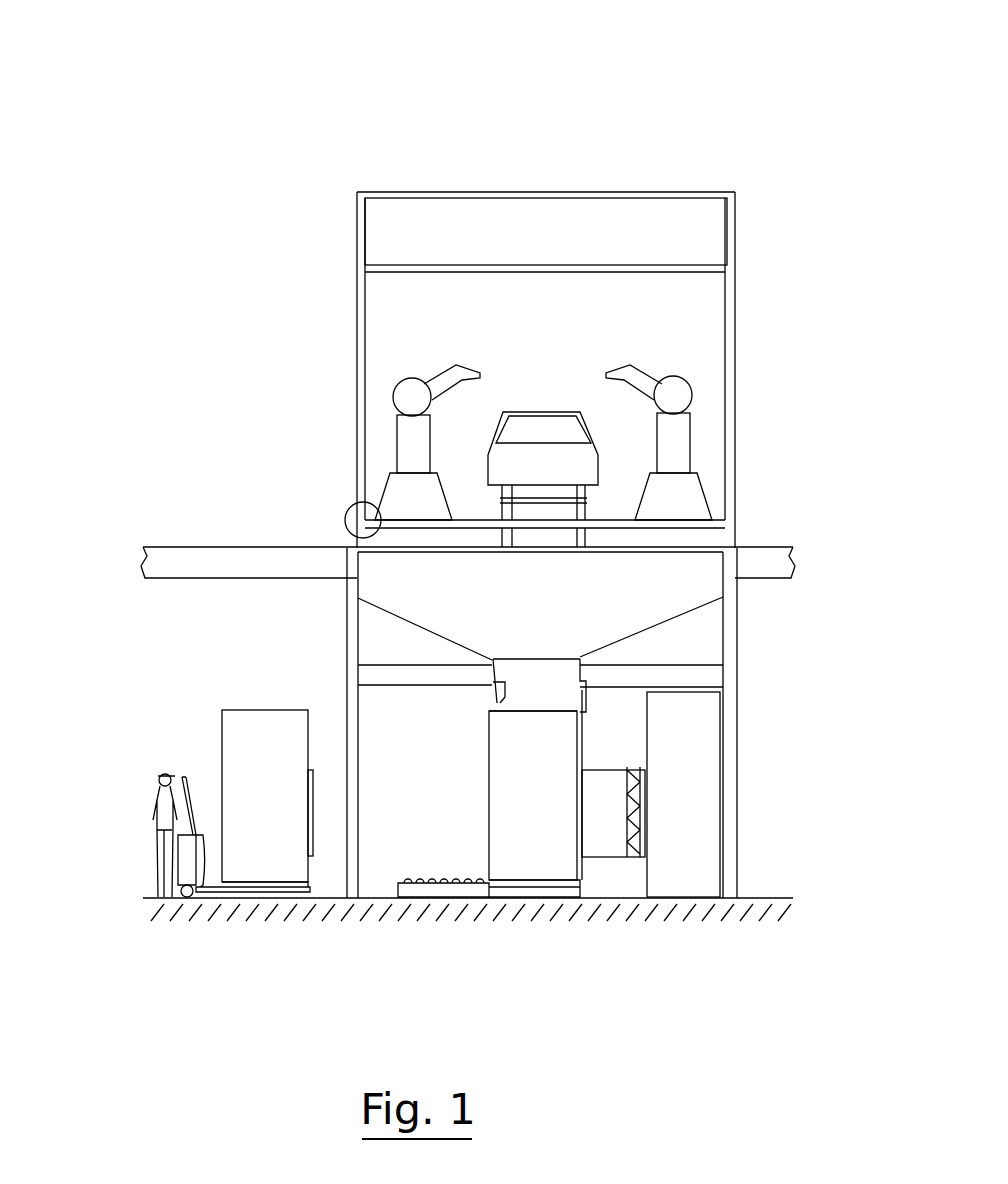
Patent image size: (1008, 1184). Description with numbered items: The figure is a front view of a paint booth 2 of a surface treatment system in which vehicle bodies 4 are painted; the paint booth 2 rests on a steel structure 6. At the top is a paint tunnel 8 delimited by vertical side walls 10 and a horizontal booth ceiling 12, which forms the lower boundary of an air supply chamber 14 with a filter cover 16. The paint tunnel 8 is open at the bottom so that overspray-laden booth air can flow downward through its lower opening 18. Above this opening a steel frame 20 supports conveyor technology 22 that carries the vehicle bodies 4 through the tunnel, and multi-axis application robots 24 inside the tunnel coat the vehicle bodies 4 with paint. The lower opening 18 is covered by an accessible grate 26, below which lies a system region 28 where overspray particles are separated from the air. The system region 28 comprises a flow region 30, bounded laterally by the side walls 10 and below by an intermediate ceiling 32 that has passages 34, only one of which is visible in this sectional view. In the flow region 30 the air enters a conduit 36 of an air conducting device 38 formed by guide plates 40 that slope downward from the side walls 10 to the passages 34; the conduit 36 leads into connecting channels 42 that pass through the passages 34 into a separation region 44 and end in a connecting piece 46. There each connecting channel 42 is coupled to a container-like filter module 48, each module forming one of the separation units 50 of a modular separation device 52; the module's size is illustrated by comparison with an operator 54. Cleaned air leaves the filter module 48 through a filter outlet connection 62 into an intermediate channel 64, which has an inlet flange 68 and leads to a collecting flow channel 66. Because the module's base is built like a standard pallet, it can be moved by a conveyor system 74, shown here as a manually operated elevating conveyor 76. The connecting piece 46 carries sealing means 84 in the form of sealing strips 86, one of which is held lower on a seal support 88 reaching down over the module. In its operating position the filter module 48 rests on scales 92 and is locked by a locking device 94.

The paint booth 2 is at (360, 112).
The vehicle bodies 4 is at (545, 412).
The steel structure 6 is at (745, 590).
The paint tunnel 8 is at (474, 313).
The side walls 10 is at (356, 357).
The booth ceiling 12 is at (396, 254).
The air supply chamber 14 is at (546, 247).
The filter cover 16 is at (607, 265).
The lower opening 18 is at (345, 515).
The steel frame 20 is at (680, 522).
The conveyor technology 22 is at (598, 500).
The application robots 24 is at (407, 435).
The grate 26 is at (657, 551).
The system region 28 is at (344, 657).
The flow region 30 is at (386, 582).
The intermediate ceiling 32 is at (703, 676).
The passages 34 is at (591, 662).
The conduit 36 is at (546, 590).
The air conducting device 38 is at (694, 622).
The guide plates 40 is at (430, 615).
The connecting channels 42 is at (559, 684).
The separation region 44 is at (652, 752).
The connecting piece 46 is at (489, 697).
The filter module 48 is at (253, 717).
The separation units 50 is at (219, 733).
The separation device 52 is at (458, 758).
The operator 54 is at (150, 815).
The filter outlet connection 62 is at (617, 832).
The intermediate channel 64 is at (632, 848).
The collecting flow channel 66 is at (688, 840).
The inlet flange 68 is at (612, 797).
The conveyor system 74 is at (265, 912).
The elevating conveyor 76 is at (203, 900).
The sealing means 84 is at (564, 720).
The sealing strip 86 is at (576, 718).
The seal support 88 is at (578, 684).
The scales 92 is at (497, 903).
The locking device 94 is at (485, 723).